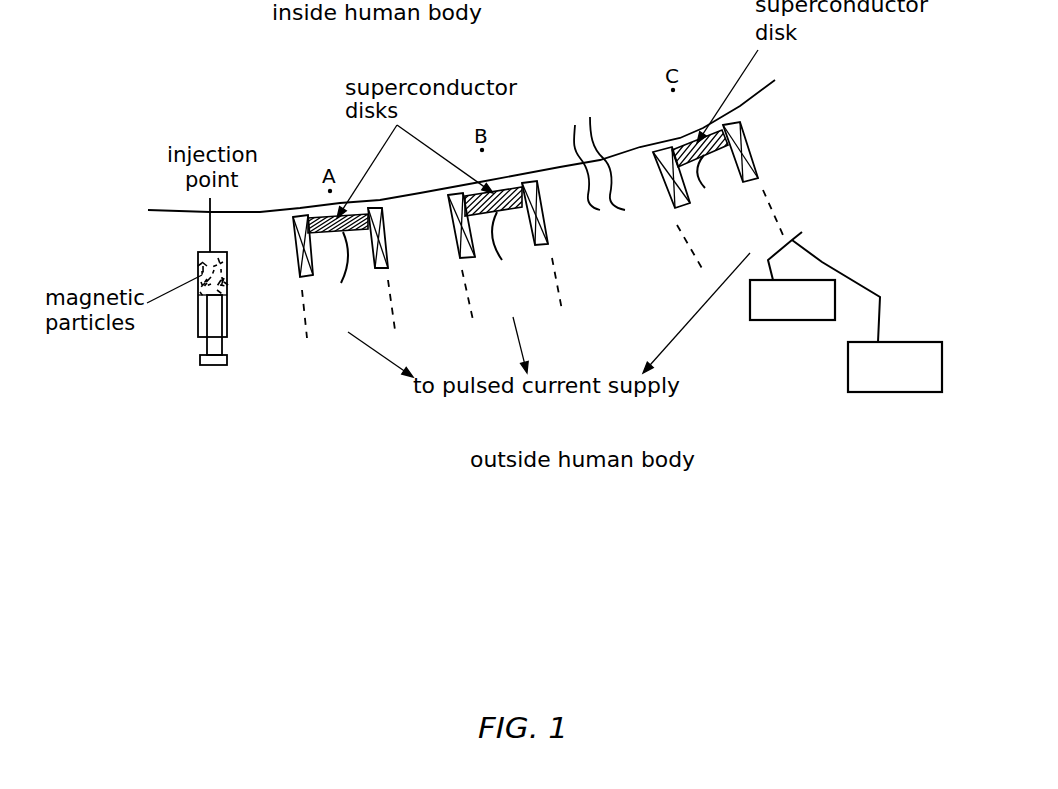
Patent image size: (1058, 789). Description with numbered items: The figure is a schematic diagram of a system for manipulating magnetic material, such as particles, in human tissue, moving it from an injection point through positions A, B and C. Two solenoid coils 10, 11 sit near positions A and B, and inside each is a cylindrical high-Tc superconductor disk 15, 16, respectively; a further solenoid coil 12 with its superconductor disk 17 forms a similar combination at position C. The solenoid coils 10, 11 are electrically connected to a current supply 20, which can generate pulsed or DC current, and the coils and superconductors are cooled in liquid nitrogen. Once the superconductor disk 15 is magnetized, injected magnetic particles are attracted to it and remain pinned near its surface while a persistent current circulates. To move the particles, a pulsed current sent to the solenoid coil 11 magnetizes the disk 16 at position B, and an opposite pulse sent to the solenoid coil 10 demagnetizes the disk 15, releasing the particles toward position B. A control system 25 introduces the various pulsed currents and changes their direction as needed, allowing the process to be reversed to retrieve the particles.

The solenoid coil 10 is at (272, 265).
The solenoid coil 11 is at (543, 213).
The solenoid coil 12 is at (748, 142).
The high-Tc superconductor disk 15 is at (326, 342).
The high-Tc superconductor disk 16 is at (553, 251).
The superconductor disk 17 is at (778, 196).
The current supply 20 is at (895, 367).
The control system 25 is at (792, 301).